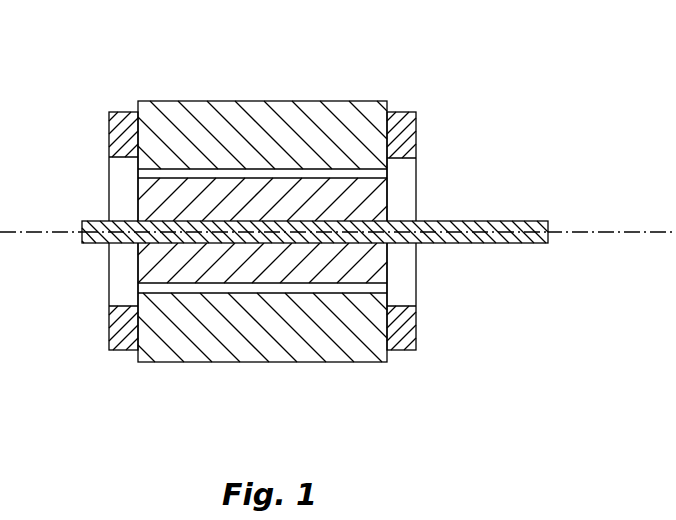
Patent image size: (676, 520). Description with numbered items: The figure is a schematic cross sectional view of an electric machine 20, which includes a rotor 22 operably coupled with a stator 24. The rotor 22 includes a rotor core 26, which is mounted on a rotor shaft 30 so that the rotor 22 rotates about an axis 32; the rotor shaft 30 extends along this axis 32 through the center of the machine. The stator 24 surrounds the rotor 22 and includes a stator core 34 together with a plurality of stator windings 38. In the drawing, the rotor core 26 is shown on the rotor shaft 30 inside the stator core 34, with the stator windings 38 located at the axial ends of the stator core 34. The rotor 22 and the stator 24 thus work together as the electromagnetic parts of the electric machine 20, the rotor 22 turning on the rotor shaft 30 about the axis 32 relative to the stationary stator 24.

The electric machine 20 is at (167, 72).
The rotor 22 is at (135, 204).
The stator 24 is at (324, 96).
The rotor core 26 is at (378, 201).
The rotor shaft 30 is at (500, 244).
The axis 32 is at (625, 231).
The stator core 34 is at (243, 112).
The stator windings 38 is at (395, 111).